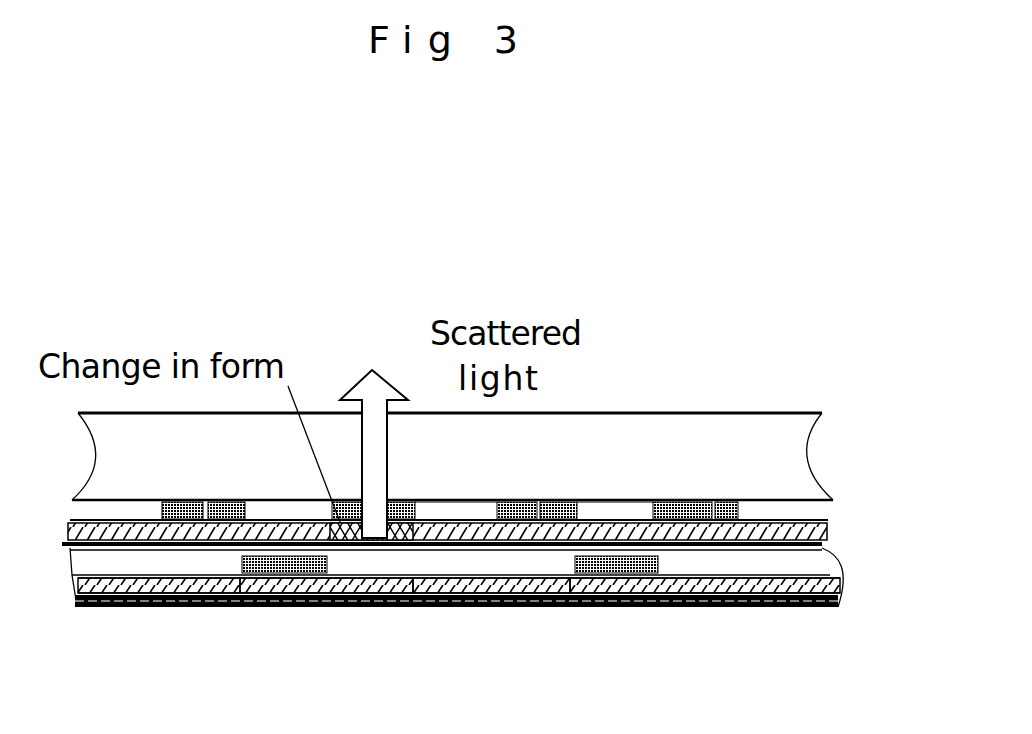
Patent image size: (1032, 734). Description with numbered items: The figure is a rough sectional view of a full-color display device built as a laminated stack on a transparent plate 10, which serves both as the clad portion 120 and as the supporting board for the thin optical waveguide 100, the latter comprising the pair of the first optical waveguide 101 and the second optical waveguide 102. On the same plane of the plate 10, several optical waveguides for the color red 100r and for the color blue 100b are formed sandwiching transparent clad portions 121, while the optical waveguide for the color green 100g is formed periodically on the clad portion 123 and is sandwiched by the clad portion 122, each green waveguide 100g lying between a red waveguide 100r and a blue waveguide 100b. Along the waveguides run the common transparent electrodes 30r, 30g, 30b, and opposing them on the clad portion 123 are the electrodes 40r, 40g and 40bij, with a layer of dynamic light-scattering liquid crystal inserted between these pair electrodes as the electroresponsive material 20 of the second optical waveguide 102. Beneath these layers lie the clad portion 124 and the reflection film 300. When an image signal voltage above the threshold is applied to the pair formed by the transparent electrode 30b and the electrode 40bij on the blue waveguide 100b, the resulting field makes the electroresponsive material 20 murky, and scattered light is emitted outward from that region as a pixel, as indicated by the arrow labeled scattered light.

The transparent plate 10 is at (585, 440).
The clad portion 120 is at (690, 428).
The electroresponsive material 20 is at (122, 520).
The transparent electrode for red 30r is at (172, 500).
The transparent electrode for blue 30b is at (368, 498).
The transparent electrode for green 30g is at (257, 610).
The optical waveguide for the color red 100r is at (210, 500).
The optical waveguide for the color blue 100b is at (440, 497).
The optical waveguide for the color green 100g is at (250, 608).
The transparent clad portion 121 is at (485, 510).
The second optical waveguide 102 is at (768, 523).
The clad portion 122 is at (812, 568).
The clad portion 123 is at (98, 550).
The clad portion 124 is at (820, 608).
The electrode for red 40r is at (185, 547).
The electrode for green 40g is at (273, 610).
The electrode for blue pixel 40bij is at (392, 547).
The first optical waveguide 101 is at (545, 548).
The optical waveguide 100 is at (348, 608).
The reflection film 300 is at (570, 608).